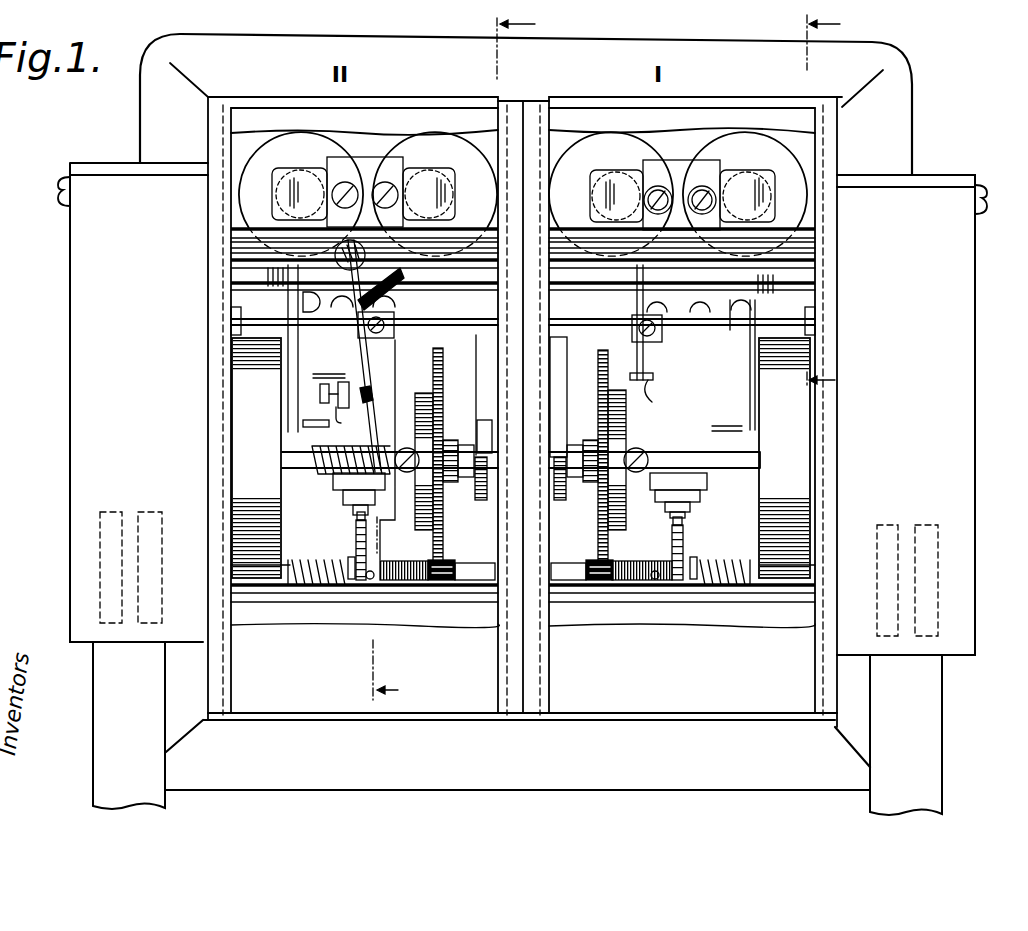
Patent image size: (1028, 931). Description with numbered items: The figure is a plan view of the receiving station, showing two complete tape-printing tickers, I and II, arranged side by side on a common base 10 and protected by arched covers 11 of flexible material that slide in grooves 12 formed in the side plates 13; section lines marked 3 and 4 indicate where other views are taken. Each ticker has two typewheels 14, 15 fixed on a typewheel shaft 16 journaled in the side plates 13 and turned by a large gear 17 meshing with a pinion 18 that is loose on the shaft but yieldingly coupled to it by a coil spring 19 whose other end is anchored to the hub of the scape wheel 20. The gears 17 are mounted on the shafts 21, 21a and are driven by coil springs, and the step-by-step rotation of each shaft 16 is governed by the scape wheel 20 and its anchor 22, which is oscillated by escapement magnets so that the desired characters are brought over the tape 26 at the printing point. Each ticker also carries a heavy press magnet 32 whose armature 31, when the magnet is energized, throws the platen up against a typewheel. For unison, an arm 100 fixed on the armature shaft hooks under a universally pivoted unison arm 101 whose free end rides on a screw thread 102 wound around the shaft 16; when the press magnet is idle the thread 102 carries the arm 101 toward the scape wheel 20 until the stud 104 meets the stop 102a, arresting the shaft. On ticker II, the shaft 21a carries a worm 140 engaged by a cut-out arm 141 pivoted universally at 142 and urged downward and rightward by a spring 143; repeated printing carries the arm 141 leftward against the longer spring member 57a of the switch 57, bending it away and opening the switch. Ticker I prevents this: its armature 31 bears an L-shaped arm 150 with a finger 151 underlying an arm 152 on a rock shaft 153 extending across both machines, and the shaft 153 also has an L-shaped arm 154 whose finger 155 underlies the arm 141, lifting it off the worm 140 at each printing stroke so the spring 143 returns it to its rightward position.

The section line 3- 3 is at (445, 356).
The section line 4- 4 is at (811, 201).
The base 10 is at (411, 42).
The arched covers 11 is at (280, 697).
The grooves 12 is at (231, 683).
The side plates 13 is at (208, 681).
The typewheel 14 is at (148, 530).
The typewheel 15 is at (110, 530).
The typewheel shaft 16 is at (468, 576).
The large gear 17 is at (437, 521).
The pinion 18 is at (442, 565).
The coil spring 19 is at (400, 572).
The scape wheel 20 is at (352, 548).
The shaft 21 is at (722, 462).
The shaft 21a is at (302, 476).
The anchor 22 is at (352, 526).
The tape 26 is at (517, 728).
The armature 31 is at (717, 165).
The press magnet 32 is at (523, 194).
The switch 57 is at (334, 423).
The switch member 57a is at (320, 402).
The unison arm 100 is at (282, 360).
The unison arm 101 is at (290, 437).
The screw thread 102 is at (320, 603).
The stop 102a is at (307, 563).
The stud 104 is at (300, 602).
The worm 140 is at (312, 463).
The cut-out arm 141 is at (368, 392).
The pivot 142 is at (343, 247).
The spring 143 is at (407, 293).
The L-shaped arm 150 is at (636, 300).
The finger 151 is at (660, 378).
The arm 152 is at (652, 395).
The rock shaft 153 is at (732, 330).
The L-shaped arm 154 is at (373, 343).
The finger 155 is at (347, 374).